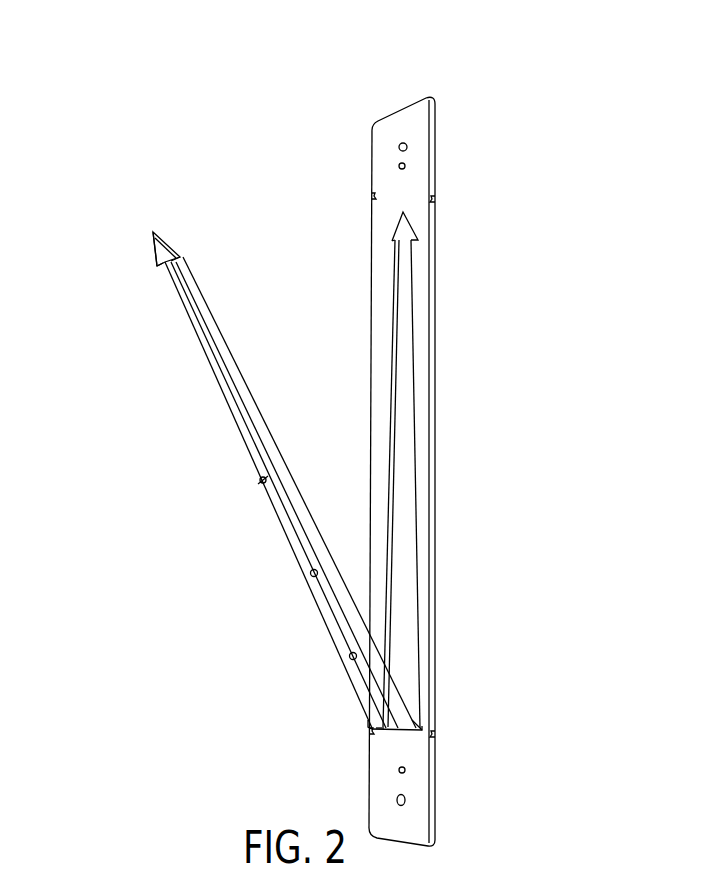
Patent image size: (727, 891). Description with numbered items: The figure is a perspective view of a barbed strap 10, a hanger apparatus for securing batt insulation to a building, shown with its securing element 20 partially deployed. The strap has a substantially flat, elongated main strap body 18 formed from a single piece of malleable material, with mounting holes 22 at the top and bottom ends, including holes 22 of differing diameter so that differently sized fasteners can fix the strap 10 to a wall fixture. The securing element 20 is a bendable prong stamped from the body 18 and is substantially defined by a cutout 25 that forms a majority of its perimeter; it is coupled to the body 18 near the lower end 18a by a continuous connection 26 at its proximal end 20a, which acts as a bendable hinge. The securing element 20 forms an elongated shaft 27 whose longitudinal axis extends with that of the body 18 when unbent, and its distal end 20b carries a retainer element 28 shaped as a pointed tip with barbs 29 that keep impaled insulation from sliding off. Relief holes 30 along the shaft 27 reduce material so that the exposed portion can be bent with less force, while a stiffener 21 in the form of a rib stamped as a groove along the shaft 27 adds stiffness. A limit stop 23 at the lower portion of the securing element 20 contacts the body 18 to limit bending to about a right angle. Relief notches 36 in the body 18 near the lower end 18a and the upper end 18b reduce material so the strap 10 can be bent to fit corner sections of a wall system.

The barbed strap 10 is at (598, 117).
The main strap body 18 is at (422, 436).
The lower end of the body 18a is at (491, 772).
The upper end of strip 18b is at (443, 89).
The securing element 20 is at (247, 388).
The proximal end of the securing element 20a is at (352, 703).
The distal end of the securing element 20b is at (129, 257).
The stiffener 21 is at (262, 479).
The mounting holes 22 is at (398, 165).
The limit stop 23 is at (377, 747).
The cutout 25 is at (403, 372).
The continuous connection 26 is at (417, 722).
The elongated shaft 27 is at (265, 427).
The retainer element 28 is at (163, 233).
The barbs 29 is at (172, 258).
The relief holes 30 is at (311, 575).
The relief notches 36 is at (366, 195).